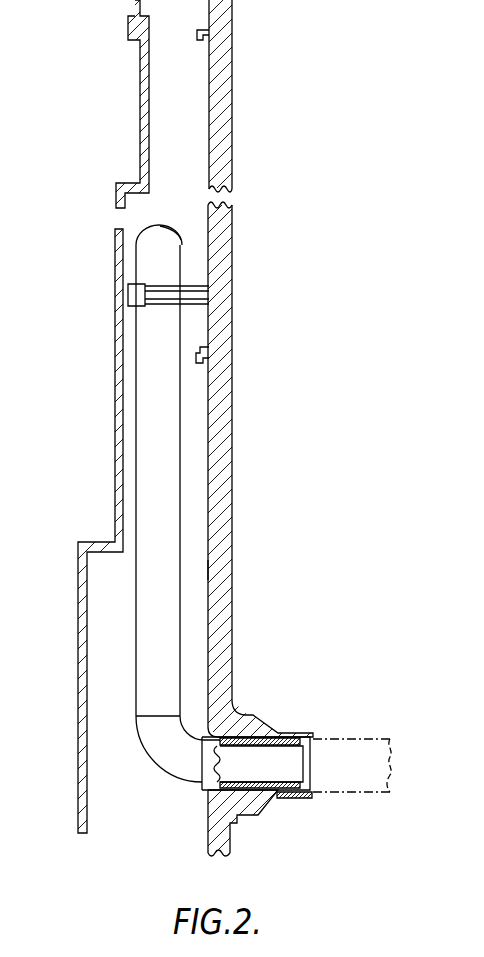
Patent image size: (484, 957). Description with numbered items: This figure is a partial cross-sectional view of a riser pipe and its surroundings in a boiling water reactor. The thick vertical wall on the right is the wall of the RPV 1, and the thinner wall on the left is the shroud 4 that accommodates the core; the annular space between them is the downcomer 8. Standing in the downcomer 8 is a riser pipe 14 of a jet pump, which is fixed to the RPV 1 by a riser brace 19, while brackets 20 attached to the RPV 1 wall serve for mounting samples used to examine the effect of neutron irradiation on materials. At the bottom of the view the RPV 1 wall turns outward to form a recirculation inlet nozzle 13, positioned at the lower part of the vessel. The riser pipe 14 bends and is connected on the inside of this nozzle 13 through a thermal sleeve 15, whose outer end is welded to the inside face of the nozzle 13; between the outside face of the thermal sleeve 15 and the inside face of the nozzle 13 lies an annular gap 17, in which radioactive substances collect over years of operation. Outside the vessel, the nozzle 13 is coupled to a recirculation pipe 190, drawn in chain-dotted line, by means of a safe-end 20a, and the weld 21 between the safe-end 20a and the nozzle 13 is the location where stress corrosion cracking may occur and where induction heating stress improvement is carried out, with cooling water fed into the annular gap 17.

The RPV 1 is at (233, 447).
The shroud 4 is at (77, 612).
The downcomer 8 is at (210, 570).
The recirculation inlet nozzle 13 is at (250, 715).
The riser pipe 14 is at (136, 650).
The thermal sleeve 15 is at (197, 784).
The annular gap 17 is at (212, 776).
The riser brace 19 is at (197, 282).
The bracket 20 is at (207, 36).
The safe-end 20a is at (305, 736).
The weld 21 is at (293, 797).
The recirculation pipe 190 is at (372, 736).